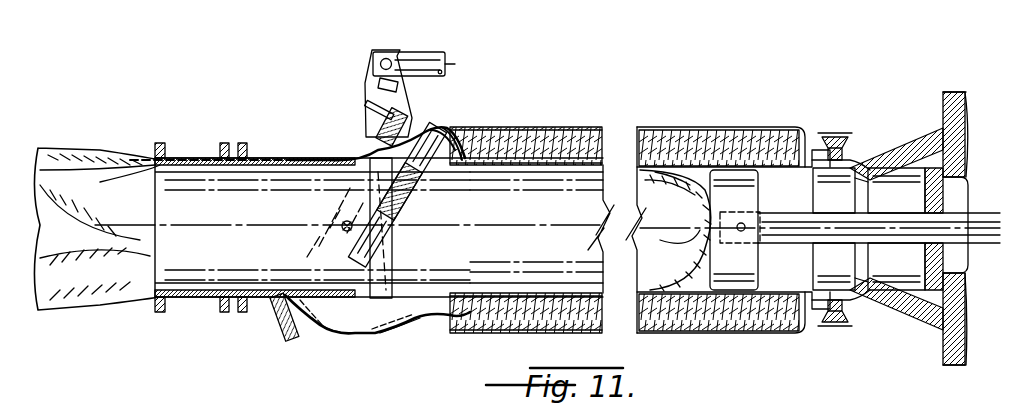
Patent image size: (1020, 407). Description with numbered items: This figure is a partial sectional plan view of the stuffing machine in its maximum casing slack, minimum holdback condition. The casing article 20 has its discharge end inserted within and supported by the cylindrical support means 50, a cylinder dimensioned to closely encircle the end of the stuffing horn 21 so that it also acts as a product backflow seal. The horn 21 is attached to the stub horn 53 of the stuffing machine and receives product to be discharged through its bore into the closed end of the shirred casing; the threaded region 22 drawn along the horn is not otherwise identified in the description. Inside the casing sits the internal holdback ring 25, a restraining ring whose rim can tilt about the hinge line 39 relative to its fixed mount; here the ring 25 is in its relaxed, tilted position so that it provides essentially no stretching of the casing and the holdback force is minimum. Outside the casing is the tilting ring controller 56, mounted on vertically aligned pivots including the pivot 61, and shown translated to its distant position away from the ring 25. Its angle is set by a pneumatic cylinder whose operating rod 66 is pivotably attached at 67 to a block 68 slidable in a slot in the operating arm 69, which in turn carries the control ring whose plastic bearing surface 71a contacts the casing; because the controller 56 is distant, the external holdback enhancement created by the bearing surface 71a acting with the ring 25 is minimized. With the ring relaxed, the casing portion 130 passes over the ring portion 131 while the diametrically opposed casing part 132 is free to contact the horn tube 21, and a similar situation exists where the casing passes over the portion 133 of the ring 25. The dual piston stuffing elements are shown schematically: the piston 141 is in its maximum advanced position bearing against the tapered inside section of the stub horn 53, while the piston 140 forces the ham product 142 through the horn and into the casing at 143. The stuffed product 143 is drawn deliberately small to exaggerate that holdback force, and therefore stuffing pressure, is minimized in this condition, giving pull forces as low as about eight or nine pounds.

The casing article 20 is at (768, 116).
The stuffing horn 21 is at (565, 215).
The threads 22 is at (545, 128).
The internal holdback ring 25 is at (428, 208).
The hinge line 39 is at (382, 228).
The cylindrical support means 50 is at (178, 158).
The stub horn 53 is at (903, 142).
The tilting ring controller 56 is at (255, 339).
The pivot 61 is at (343, 223).
The operating rod 66 is at (430, 56).
The pivot attachment 67 is at (381, 63).
The block 68 is at (383, 52).
The operating arm 69 is at (367, 103).
The bearing surface 71a is at (365, 150).
The casing portion 130 is at (430, 128).
The ring portion 131 is at (478, 118).
The diametrically opposed casing part 132 is at (372, 332).
The ring portion 133 is at (324, 330).
The piston 140 is at (720, 253).
The piston 141 is at (925, 315).
The ham product 142 is at (688, 140).
The stuffed product 143 is at (90, 162).